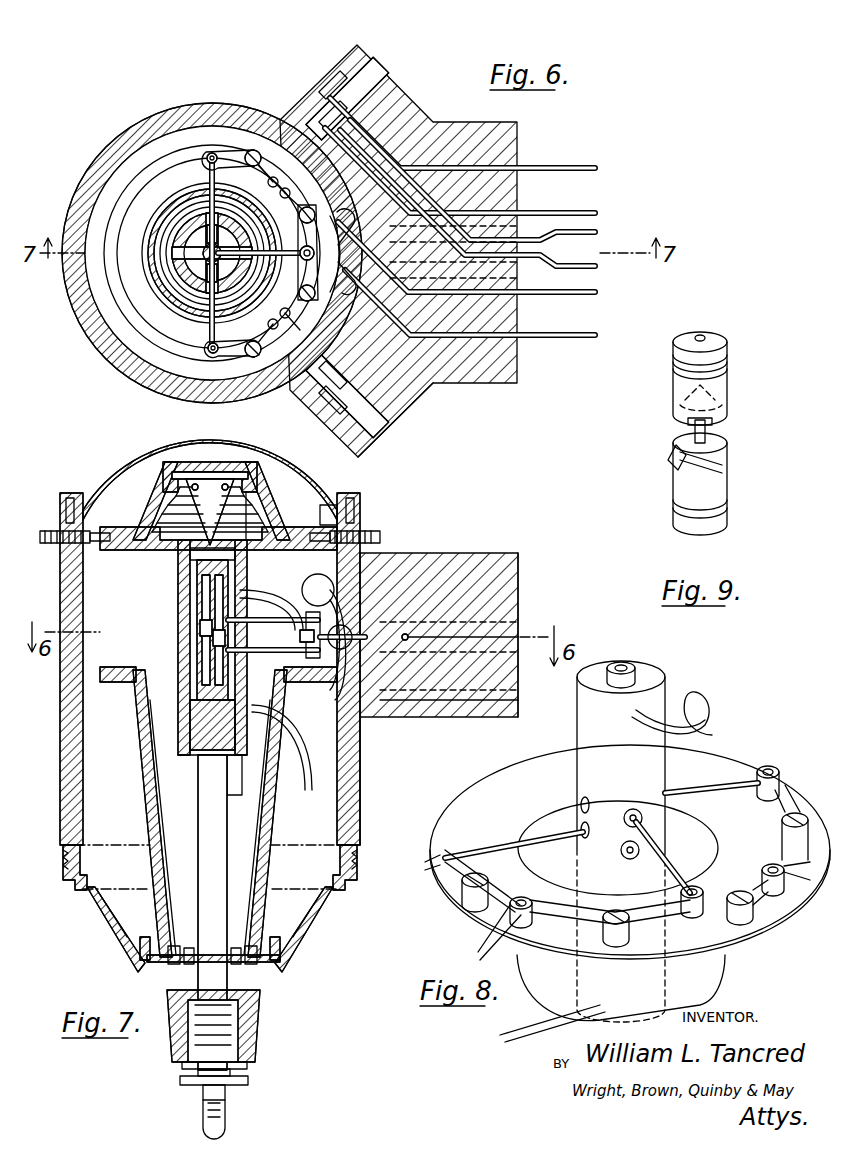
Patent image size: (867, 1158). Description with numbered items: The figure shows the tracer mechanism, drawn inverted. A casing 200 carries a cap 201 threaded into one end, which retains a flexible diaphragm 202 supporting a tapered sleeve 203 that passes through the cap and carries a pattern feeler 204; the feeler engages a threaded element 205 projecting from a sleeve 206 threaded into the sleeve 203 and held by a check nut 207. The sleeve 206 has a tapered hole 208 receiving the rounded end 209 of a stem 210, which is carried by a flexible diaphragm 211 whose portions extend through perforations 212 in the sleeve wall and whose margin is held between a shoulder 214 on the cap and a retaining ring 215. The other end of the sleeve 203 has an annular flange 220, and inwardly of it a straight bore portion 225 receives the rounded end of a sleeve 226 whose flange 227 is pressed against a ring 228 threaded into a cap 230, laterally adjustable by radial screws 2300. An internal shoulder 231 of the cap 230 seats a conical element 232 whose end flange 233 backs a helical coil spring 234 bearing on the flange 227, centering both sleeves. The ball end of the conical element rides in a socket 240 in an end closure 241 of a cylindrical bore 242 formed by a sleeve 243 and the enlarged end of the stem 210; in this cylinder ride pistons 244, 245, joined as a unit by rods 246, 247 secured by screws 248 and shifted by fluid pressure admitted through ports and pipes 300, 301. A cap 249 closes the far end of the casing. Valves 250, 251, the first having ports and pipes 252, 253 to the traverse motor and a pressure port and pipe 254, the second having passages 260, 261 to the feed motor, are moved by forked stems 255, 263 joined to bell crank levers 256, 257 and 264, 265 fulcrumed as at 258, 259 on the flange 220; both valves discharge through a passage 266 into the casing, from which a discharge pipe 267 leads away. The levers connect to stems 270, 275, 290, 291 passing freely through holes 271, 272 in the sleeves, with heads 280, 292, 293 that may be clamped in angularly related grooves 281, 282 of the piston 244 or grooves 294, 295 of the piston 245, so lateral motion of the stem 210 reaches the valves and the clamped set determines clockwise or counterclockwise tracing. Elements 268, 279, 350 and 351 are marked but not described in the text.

In FIG. 6, the casing 200 is at (101, 335).
In FIG. 7, the casing 200 is at (358, 762).
In FIG. 7, the cap 201 is at (322, 940).
In FIG. 7, the flexible diaphragm 202 is at (352, 826).
In FIG. 8, the tapered sleeve 203 is at (700, 982).
In FIG. 7, the pattern feeler 204 is at (218, 1128).
In FIG. 7, the threaded element 205 is at (203, 1113).
In FIG. 7, the sleeve 206 is at (248, 1081).
In FIG. 7, the check nut 207 is at (257, 1065).
In FIG. 7, the tapered hole 208 is at (250, 1040).
In FIG. 7, the rounded end 209 is at (152, 822).
In FIG. 7, the stem 210 is at (200, 836).
In FIG. 7, the flexible diaphragm 211 is at (178, 952).
In FIG. 7, the perforations 212 is at (235, 953).
In FIG. 7, the shoulder 214 is at (268, 970).
In FIG. 7, the retaining ring 215 is at (280, 946).
In FIG. 6, the annular flange 220 is at (160, 368).
In FIG. 7, the annular flange 220 is at (122, 672).
In FIG. 8, the annular flange 220 is at (548, 758).
In FIG. 7, the straight bore portion 225 is at (148, 778).
In FIG. 6, the sleeve 226 is at (190, 315).
In FIG. 7, the sleeve 226 is at (180, 650).
In FIG. 7, the flange 227 is at (152, 545).
In FIG. 7, the ring 228 is at (322, 538).
In FIG. 7, the cap 230 is at (276, 514).
In FIG. 7, the internal shoulder 231 is at (190, 470).
In FIG. 7, the conical element 232 is at (211, 492).
In FIG. 7, the end flange 233 is at (232, 476).
In FIG. 7, the helical coil spring 234 is at (170, 492).
In FIG. 7, the socket 240 is at (244, 498).
In FIG. 7, the end closure 241 is at (186, 552).
In FIG. 7, the cylindrical bore 242 is at (188, 580).
In FIG. 6, the sleeve 243 is at (183, 266).
In FIG. 7, the sleeve 243 is at (182, 716).
In FIG. 8, the sleeve 243 is at (655, 707).
In FIG. 7, the piston 244 is at (232, 612).
In FIG. 9, the piston 244 is at (717, 390).
In FIG. 7, the piston 245 is at (233, 770).
In FIG. 9, the piston 245 is at (717, 493).
In FIG. 7, the rod 246 is at (197, 637).
In FIG. 9, the rod 246 is at (700, 440).
In FIG. 9, the rod 247 is at (685, 445).
In FIG. 9, the screws 248 is at (696, 343).
In FIG. 7, the cap 249 is at (326, 504).
In FIG. 6, the valve 250 is at (346, 95).
In FIG. 6, the valve 251 is at (402, 398).
In FIG. 6, the ports and pipes 252 is at (540, 167).
In FIG. 6, the ports and pipes 253 is at (565, 212).
In FIG. 6, the pressure port and pipe 254 is at (585, 266).
In FIG. 6, the forked stem 255 is at (275, 180).
In FIG. 6, the bell crank lever 256 is at (210, 149).
In FIG. 8, the bell crank lever 256 is at (783, 792).
In FIG. 6, the bell crank lever 257 is at (316, 202).
In FIG. 8, the bell crank lever 257 is at (770, 905).
In FIG. 6, the fulcrum 258 is at (252, 149).
In FIG. 8, the fulcrum 258 is at (787, 822).
In FIG. 6, the fulcrum 259 is at (342, 213).
In FIG. 8, the fulcrum 259 is at (770, 883).
In FIG. 6, the ports and passages 260 is at (565, 294).
In FIG. 6, the ports and passages 261 is at (562, 338).
In FIG. 6, the forked stem 263 is at (304, 354).
In FIG. 6, the bell crank lever 264 is at (316, 298).
In FIG. 8, the bell crank lever 264 is at (562, 903).
In FIG. 6, the bell crank lever 265 is at (244, 357).
In FIG. 8, the bell crank lever 265 is at (497, 898).
In FIG. 6, the passage 266 is at (378, 98).
In FIG. 6, the discharge pipe 267 is at (598, 236).
In FIG. 6, the lower connector 268 is at (345, 420).
In FIG. 6, the stem 270 is at (210, 164).
In FIG. 8, the stem 270 is at (697, 789).
In FIG. 6, the hole 271 is at (205, 192).
In FIG. 6, the hole 272 is at (198, 228).
In FIG. 6, the stem 275 is at (349, 242).
In FIG. 8, the stem 275 is at (670, 872).
In FIG. 6, the ring 279 is at (187, 243).
In FIG. 6, the head 280 is at (234, 234).
In FIG. 8, the head 280 is at (634, 810).
In FIG. 9, the groove 281 is at (723, 417).
In FIG. 9, the groove 282 is at (685, 416).
In FIG. 8, the stem 290 is at (672, 863).
In FIG. 6, the stem 291 is at (209, 349).
In FIG. 8, the stem 291 is at (497, 843).
In FIG. 8, the head 292 is at (626, 848).
In FIG. 6, the head 293 is at (178, 284).
In FIG. 9, the groove 294 is at (723, 450).
In FIG. 9, the groove 295 is at (690, 478).
In FIG. 7, the ports and pipes 300 is at (290, 580).
In FIG. 7, the ports and pipes 301 is at (311, 790).
In FIG. 6, the upper fitting 350 is at (325, 95).
In FIG. 6, the lower fitting 351 is at (322, 408).
In FIG. 7, the radially arranged screws 2300 is at (40, 530).